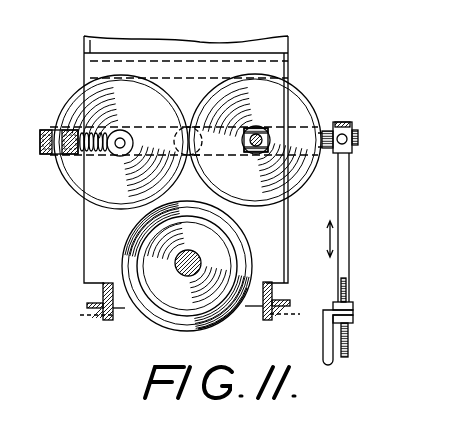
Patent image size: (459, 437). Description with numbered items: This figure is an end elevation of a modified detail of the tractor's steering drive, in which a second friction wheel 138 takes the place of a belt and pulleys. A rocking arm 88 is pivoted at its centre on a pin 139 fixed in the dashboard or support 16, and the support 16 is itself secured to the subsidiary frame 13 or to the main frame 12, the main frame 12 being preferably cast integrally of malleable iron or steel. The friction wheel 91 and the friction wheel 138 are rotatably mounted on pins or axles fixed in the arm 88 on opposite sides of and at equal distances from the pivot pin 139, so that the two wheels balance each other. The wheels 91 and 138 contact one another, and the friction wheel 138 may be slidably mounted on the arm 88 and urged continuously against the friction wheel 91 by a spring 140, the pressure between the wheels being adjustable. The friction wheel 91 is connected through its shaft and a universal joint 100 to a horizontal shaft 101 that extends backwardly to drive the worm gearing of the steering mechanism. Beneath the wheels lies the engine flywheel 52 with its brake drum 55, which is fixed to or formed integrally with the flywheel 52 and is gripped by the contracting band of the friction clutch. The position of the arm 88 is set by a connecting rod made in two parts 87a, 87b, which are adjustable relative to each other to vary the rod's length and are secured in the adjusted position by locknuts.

The main frame 12 is at (103, 320).
The subsidiary frame 13 is at (100, 302).
The support or dashboard 16 is at (186, 159).
The flywheel 52 is at (124, 246).
The brake drum 55 is at (198, 312).
The connecting rod part 87a is at (348, 244).
The connecting rod part 87b is at (323, 339).
The rocking arm 88 is at (333, 124).
The friction wheel 91 is at (318, 101).
The universal joint 100 is at (245, 147).
The horizontal shaft 101 is at (258, 128).
The friction wheel 138 is at (77, 98).
The pivot pin 139 is at (170, 133).
The spring 140 is at (90, 152).